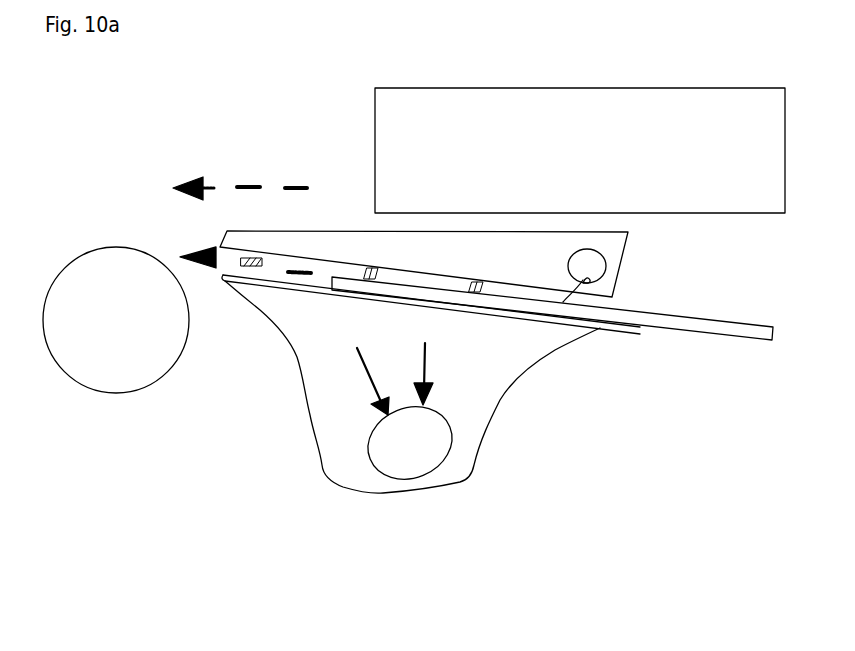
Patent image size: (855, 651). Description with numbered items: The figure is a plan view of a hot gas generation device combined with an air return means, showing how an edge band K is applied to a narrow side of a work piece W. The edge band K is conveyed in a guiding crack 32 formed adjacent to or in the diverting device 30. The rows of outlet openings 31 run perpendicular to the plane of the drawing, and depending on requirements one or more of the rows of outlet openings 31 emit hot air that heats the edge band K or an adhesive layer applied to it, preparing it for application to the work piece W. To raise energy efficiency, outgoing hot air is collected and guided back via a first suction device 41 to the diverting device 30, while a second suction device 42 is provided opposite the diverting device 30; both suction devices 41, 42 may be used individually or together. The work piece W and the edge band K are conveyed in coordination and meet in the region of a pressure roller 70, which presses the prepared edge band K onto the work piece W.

The work piece W is at (712, 123).
The diverting device 30 is at (632, 278).
The rows of outlet openings 31 is at (478, 282).
The first suction device 41 is at (612, 263).
The edge band K is at (650, 320).
The guiding crack 32 is at (317, 283).
The second suction device 42 is at (437, 463).
The pressure roller 70 is at (63, 355).